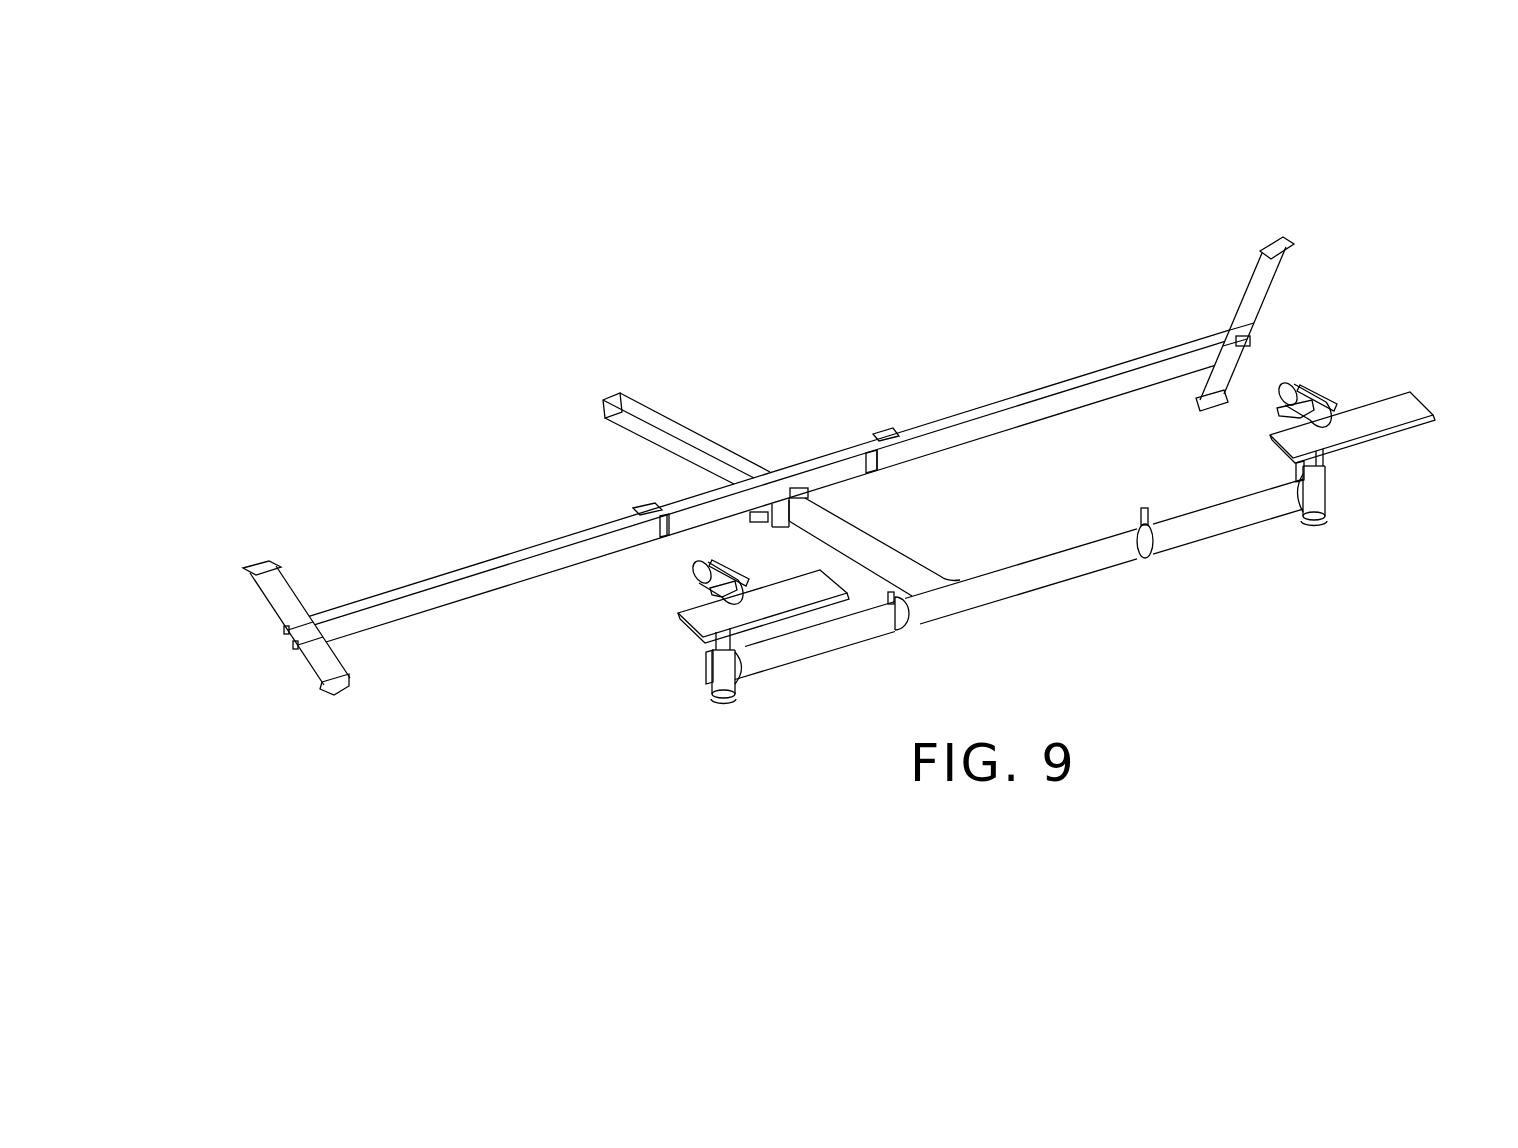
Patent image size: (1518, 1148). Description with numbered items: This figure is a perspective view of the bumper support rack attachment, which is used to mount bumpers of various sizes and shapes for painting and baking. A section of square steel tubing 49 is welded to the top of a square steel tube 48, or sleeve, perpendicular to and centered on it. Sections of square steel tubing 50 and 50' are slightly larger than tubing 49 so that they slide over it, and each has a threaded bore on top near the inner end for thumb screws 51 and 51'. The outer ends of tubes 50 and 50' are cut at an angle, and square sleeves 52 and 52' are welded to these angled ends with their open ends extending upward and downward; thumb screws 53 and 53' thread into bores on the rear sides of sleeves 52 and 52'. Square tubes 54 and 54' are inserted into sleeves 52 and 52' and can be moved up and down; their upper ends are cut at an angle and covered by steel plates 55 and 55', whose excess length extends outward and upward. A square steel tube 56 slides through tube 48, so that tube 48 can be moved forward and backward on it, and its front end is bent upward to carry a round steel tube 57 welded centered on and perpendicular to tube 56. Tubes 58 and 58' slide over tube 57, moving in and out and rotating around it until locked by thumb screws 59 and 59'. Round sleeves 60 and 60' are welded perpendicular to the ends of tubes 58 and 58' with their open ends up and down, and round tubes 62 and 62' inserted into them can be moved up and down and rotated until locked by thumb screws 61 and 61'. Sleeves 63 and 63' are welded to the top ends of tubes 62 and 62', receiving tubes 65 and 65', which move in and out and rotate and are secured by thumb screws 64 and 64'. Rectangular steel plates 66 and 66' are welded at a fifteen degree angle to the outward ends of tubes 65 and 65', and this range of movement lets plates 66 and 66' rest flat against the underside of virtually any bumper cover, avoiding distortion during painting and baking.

The square steel tube 48 is at (772, 504).
The square steel tubing 49 is at (822, 460).
The square steel tubing 50 is at (488, 582).
The square steel tubing 50' is at (1053, 390).
The thumb screw 51 is at (645, 498).
The thumb screw 51' is at (880, 421).
The square steel tubing sleeve 52 is at (278, 690).
The square steel tubing sleeve 52' is at (1294, 330).
The thumb screw 53 is at (256, 652).
The thumb screw 53' is at (1307, 322).
The square steel tubing 54 is at (269, 625).
The square steel tubing 54' is at (1305, 303).
The steel plate 55 is at (259, 542).
The steel plate 55' is at (1335, 218).
The square steel tubing 56 is at (910, 550).
The round steel tubing 57 is at (1003, 602).
The steel tubing 58 is at (815, 659).
The steel tubing 58' is at (1228, 550).
The thumb screw 59 is at (920, 639).
The thumb screw 59' is at (1128, 507).
The round tube sleeve 60 is at (686, 698).
The round tube sleeve 60' is at (1369, 496).
The thumb screw 61 is at (669, 680).
The thumb screw 61' is at (1371, 462).
The round steel tubing 62 is at (753, 683).
The round steel tubing 62' is at (1391, 441).
The tube sleeve 63 is at (681, 591).
The tube sleeve 63' is at (1371, 384).
The thumb screw 64 is at (734, 554).
The thumb screw 64' is at (1382, 365).
The steel tubing 65 is at (755, 573).
The steel tubing 65' is at (1378, 392).
The rectangular steel plate 66 is at (738, 620).
The rectangular steel plate 66' is at (1375, 426).